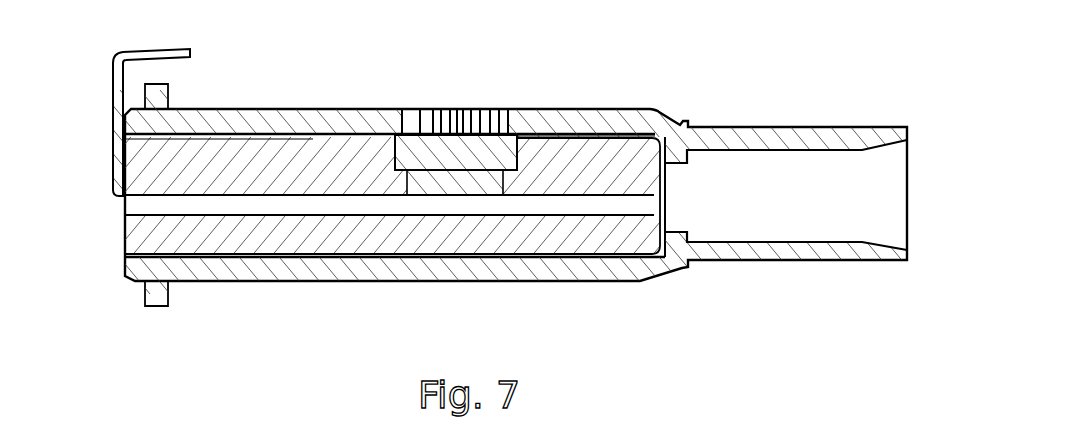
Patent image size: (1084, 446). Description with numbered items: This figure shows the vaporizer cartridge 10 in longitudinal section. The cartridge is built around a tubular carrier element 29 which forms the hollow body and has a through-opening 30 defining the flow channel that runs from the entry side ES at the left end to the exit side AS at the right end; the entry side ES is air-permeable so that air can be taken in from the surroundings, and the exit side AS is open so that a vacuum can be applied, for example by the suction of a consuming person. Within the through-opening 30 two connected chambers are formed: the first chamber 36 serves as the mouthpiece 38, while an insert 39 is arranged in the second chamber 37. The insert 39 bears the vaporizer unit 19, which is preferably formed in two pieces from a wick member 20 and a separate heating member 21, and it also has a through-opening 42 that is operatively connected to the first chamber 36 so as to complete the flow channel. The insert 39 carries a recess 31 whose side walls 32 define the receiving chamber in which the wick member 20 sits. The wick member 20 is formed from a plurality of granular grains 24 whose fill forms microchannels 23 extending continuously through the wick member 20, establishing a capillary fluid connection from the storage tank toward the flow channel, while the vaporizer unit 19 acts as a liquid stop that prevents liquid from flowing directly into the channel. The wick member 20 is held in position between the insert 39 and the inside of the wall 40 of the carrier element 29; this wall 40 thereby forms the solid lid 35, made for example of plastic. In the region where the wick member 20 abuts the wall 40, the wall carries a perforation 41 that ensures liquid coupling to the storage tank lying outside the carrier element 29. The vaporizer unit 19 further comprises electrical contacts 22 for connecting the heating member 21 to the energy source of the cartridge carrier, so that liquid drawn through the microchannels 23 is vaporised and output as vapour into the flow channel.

The vaporizer cartridge 10 is at (752, 95).
The vaporizer unit 19 is at (396, 128).
The wick member 20 is at (497, 148).
The heating member 21 is at (420, 190).
The electrical contacts 22 is at (117, 113).
The microchannels 23 is at (440, 150).
The granular grains 24 is at (508, 170).
The carrier element 29 is at (383, 134).
The through-opening 30 is at (663, 133).
The recess 31 is at (522, 143).
The side walls 32 is at (392, 142).
The lid 35 is at (263, 121).
The first chamber 36 is at (775, 230).
The second chamber 37 is at (680, 270).
The mouthpiece 38 is at (828, 126).
The insert 39 is at (480, 242).
The wall 40 is at (262, 118).
The perforation 41 is at (455, 112).
The through-opening 42 is at (122, 258).
The entry side ES is at (122, 208).
The exit side AS is at (893, 194).